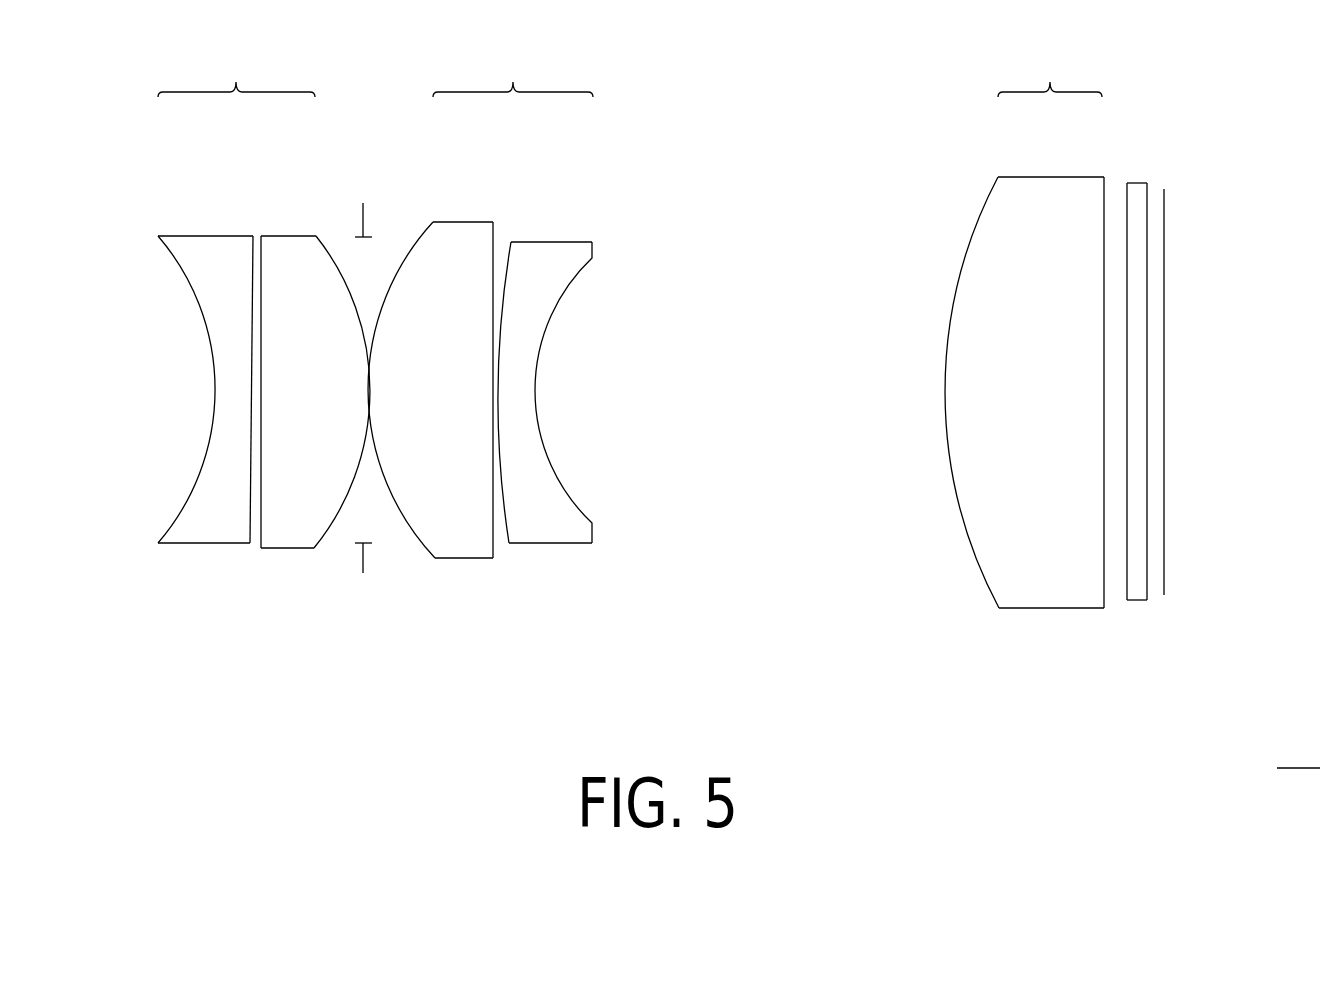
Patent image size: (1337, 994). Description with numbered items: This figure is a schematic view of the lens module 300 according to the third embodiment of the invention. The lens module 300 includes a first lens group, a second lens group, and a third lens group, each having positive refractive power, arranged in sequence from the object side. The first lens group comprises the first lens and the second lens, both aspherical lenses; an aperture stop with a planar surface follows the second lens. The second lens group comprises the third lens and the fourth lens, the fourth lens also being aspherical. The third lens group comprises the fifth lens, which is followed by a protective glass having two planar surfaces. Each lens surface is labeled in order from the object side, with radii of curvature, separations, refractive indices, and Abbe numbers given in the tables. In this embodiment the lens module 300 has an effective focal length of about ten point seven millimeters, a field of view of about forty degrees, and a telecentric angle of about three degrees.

The lens module 300 is at (1298, 753).